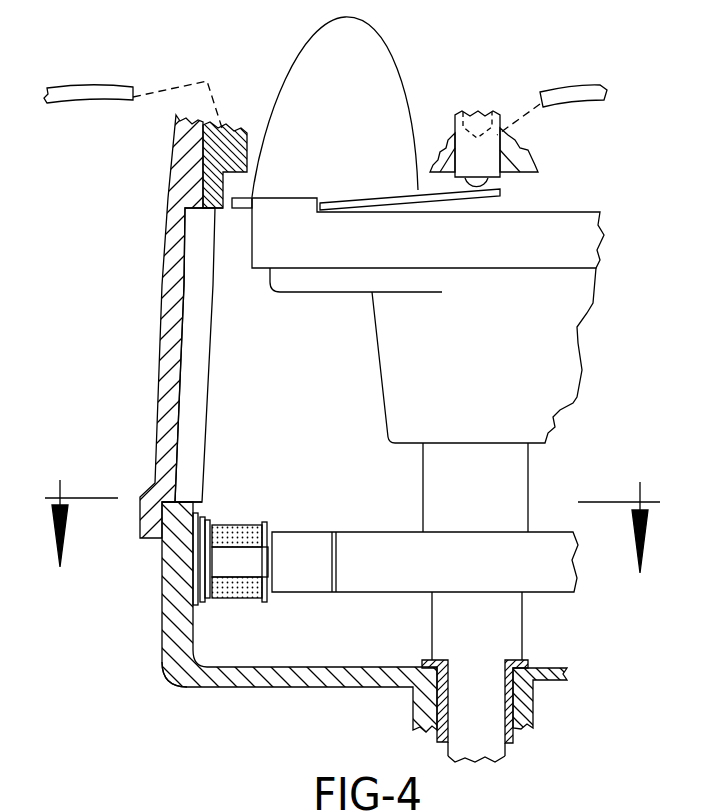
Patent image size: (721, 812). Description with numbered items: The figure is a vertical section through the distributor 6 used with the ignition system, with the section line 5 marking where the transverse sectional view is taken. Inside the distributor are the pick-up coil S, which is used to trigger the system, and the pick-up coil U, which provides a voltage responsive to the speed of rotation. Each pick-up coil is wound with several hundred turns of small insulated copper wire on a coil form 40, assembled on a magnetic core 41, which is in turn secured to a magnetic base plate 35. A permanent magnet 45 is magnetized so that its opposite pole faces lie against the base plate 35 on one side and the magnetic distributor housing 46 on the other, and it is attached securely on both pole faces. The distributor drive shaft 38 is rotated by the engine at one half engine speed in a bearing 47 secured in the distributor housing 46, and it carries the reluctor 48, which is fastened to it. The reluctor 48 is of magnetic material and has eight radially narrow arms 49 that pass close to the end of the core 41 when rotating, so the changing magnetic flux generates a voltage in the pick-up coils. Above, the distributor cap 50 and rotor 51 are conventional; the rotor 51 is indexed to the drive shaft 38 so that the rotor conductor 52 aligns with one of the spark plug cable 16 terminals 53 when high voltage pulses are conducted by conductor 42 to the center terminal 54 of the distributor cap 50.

The distributor 6 is at (606, 229).
The spark plug cable 16 is at (103, 106).
The magnetic base plate 35 is at (200, 655).
The distributor drive shaft 38 is at (525, 648).
The coil form 40 is at (263, 520).
The magnetic core 41 is at (220, 568).
The conductor 42 is at (580, 106).
The permanent magnet 45 is at (200, 610).
The distributor housing 46 is at (235, 690).
The bearing 47 is at (540, 688).
The reluctor 48 is at (538, 533).
The reluctor arm 49 is at (307, 532).
The distributor cap 50 is at (163, 267).
The rotor 51 is at (543, 367).
The rotor conductor 52 is at (362, 33).
The terminal 53 is at (245, 136).
The center terminal 54 is at (467, 112).
The pick-up coil S is at (227, 520).
The section line 5 is at (352, 545).
The pick-up coil U is at (210, 811).